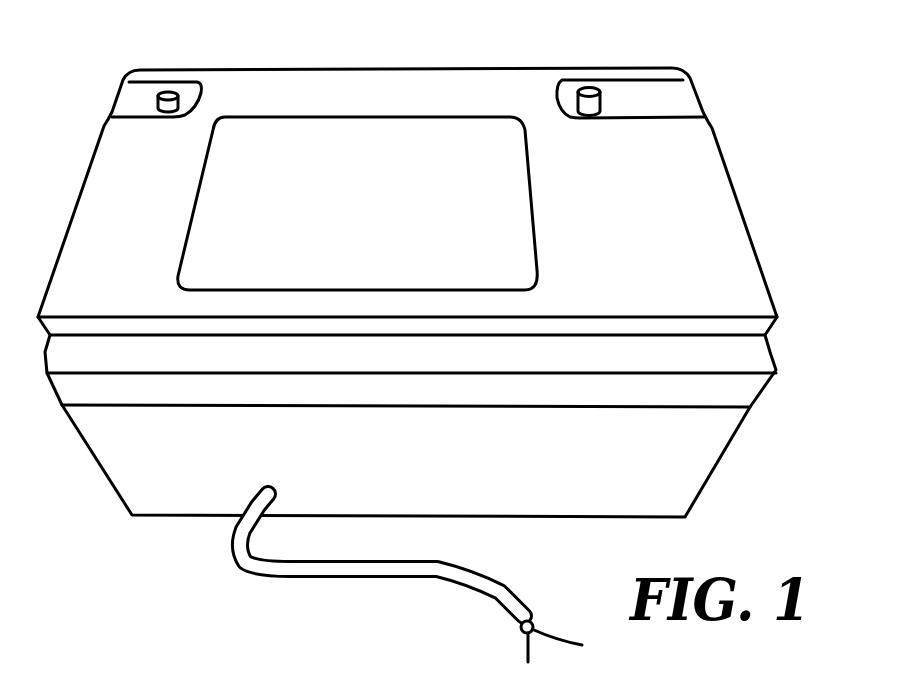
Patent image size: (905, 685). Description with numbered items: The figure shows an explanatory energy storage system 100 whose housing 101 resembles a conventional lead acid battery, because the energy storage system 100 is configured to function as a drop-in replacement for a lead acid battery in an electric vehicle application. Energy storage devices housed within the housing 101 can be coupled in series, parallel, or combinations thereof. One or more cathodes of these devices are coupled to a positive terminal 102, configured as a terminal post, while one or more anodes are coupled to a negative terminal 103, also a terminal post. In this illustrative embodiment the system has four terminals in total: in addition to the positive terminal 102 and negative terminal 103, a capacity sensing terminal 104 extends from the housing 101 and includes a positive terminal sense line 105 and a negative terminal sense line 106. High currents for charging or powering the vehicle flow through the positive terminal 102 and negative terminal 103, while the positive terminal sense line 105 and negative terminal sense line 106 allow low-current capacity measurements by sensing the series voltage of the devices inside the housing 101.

The energy storage system 100 is at (442, 341).
The housing 101 is at (728, 243).
The positive terminal 102 is at (590, 87).
The negative terminal 103 is at (168, 83).
The capacity sensing terminal 104 is at (357, 568).
The positive terminal sense line 105 is at (527, 648).
The negative terminal sense line 106 is at (548, 637).